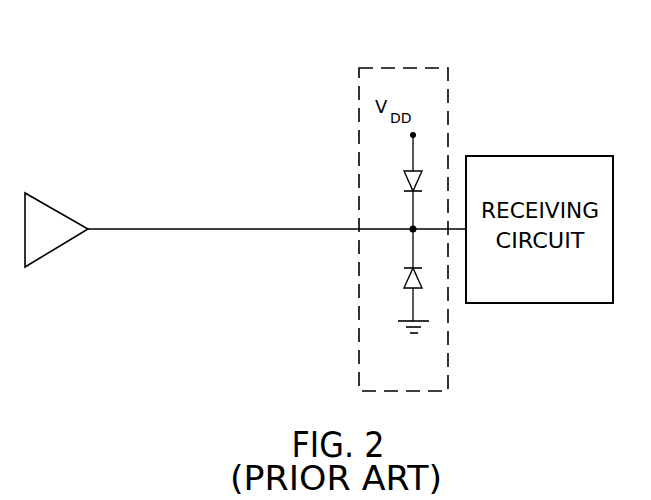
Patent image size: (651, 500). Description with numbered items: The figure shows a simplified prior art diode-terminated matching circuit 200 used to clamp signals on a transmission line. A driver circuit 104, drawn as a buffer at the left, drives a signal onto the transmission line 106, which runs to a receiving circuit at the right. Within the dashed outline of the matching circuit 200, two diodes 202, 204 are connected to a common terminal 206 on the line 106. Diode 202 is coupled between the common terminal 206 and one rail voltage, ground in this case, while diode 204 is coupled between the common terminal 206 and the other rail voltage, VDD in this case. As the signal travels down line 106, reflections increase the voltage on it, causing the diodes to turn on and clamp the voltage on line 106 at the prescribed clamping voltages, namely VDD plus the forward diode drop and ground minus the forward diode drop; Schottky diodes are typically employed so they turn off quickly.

The driver circuit 104 is at (55, 243).
The transmission line 106 is at (188, 229).
The diode terminated matching circuit 200 is at (397, 83).
The diode 202 is at (413, 287).
The diode 204 is at (417, 172).
The common terminal 206 is at (413, 229).